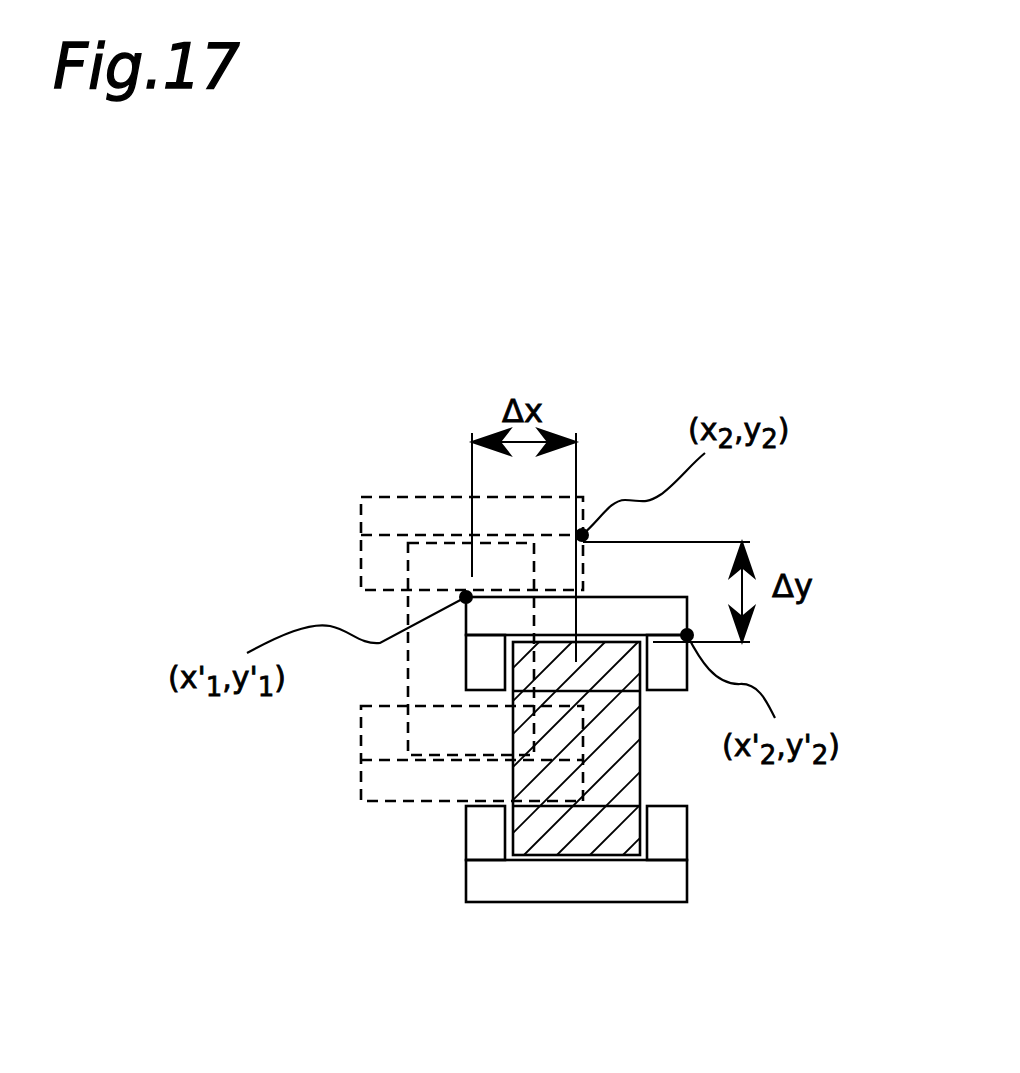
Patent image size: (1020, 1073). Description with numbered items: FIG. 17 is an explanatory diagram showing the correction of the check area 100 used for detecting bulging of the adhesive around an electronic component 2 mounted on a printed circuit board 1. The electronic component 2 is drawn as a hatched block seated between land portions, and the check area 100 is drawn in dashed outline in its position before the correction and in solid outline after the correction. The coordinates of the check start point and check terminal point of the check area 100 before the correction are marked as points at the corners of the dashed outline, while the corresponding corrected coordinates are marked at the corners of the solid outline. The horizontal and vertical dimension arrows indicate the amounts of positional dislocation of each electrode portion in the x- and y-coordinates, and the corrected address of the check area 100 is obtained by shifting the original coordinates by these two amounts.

The check area 100 is at (513, 875).
The electronic component 2 is at (570, 787).
The printed circuit board 1 is at (362, 498).